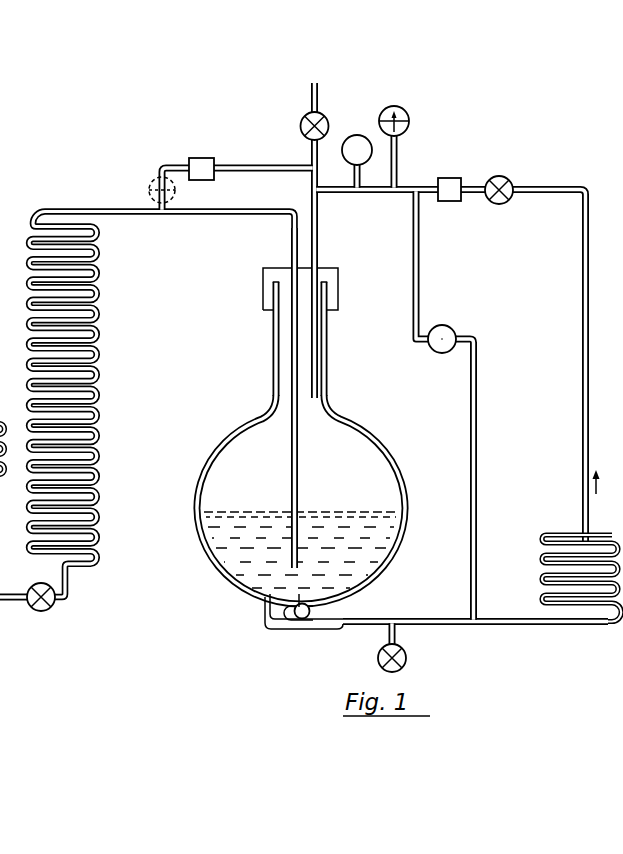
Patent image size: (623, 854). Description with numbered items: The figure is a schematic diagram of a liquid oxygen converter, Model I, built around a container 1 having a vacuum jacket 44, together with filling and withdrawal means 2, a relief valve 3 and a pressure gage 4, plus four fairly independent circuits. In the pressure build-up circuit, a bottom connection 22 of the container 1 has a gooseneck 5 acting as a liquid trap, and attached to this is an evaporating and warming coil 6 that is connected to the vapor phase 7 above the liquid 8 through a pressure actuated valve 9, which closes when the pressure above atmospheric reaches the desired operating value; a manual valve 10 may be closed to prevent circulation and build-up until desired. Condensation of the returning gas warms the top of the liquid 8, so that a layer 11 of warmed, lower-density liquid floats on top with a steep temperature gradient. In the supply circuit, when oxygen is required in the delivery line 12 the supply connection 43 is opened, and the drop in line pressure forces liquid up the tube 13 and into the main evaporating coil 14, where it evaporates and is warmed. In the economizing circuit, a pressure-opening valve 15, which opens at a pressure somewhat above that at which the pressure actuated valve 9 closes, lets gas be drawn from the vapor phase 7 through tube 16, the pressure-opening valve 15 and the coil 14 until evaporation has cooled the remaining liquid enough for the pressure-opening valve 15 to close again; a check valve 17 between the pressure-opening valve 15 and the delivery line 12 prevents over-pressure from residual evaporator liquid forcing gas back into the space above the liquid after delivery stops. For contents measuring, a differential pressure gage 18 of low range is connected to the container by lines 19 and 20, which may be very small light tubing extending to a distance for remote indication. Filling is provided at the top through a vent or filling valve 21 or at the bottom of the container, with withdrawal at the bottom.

The container 1 is at (323, 436).
The filling and withdrawal means 2 is at (408, 660).
The relief valve 3 is at (410, 113).
The pressure gage 4 is at (361, 135).
The gooseneck 5 is at (316, 608).
The evaporating and warming coil 6 is at (541, 581).
The vapor phase 7 is at (345, 431).
The liquid 8 is at (370, 532).
The pressure actuated valve 9 is at (453, 178).
The manual valve 10 is at (512, 178).
The layer of warmed liquid 11 is at (380, 512).
The delivery line 12 is at (20, 596).
The tube 13 is at (297, 441).
The main evaporating coil 14 is at (100, 362).
The pressure-opening valve 15 is at (200, 158).
The tube 16 is at (317, 351).
The check valve 17 is at (155, 178).
The differential pressure gage 18 is at (451, 330).
The line 19 is at (478, 433).
The line 20 is at (420, 264).
The vent or filling valve 21 is at (323, 115).
The bottom connection 22 is at (409, 617).
The supply connection 43 is at (52, 607).
The vacuum jacket 44 is at (268, 412).